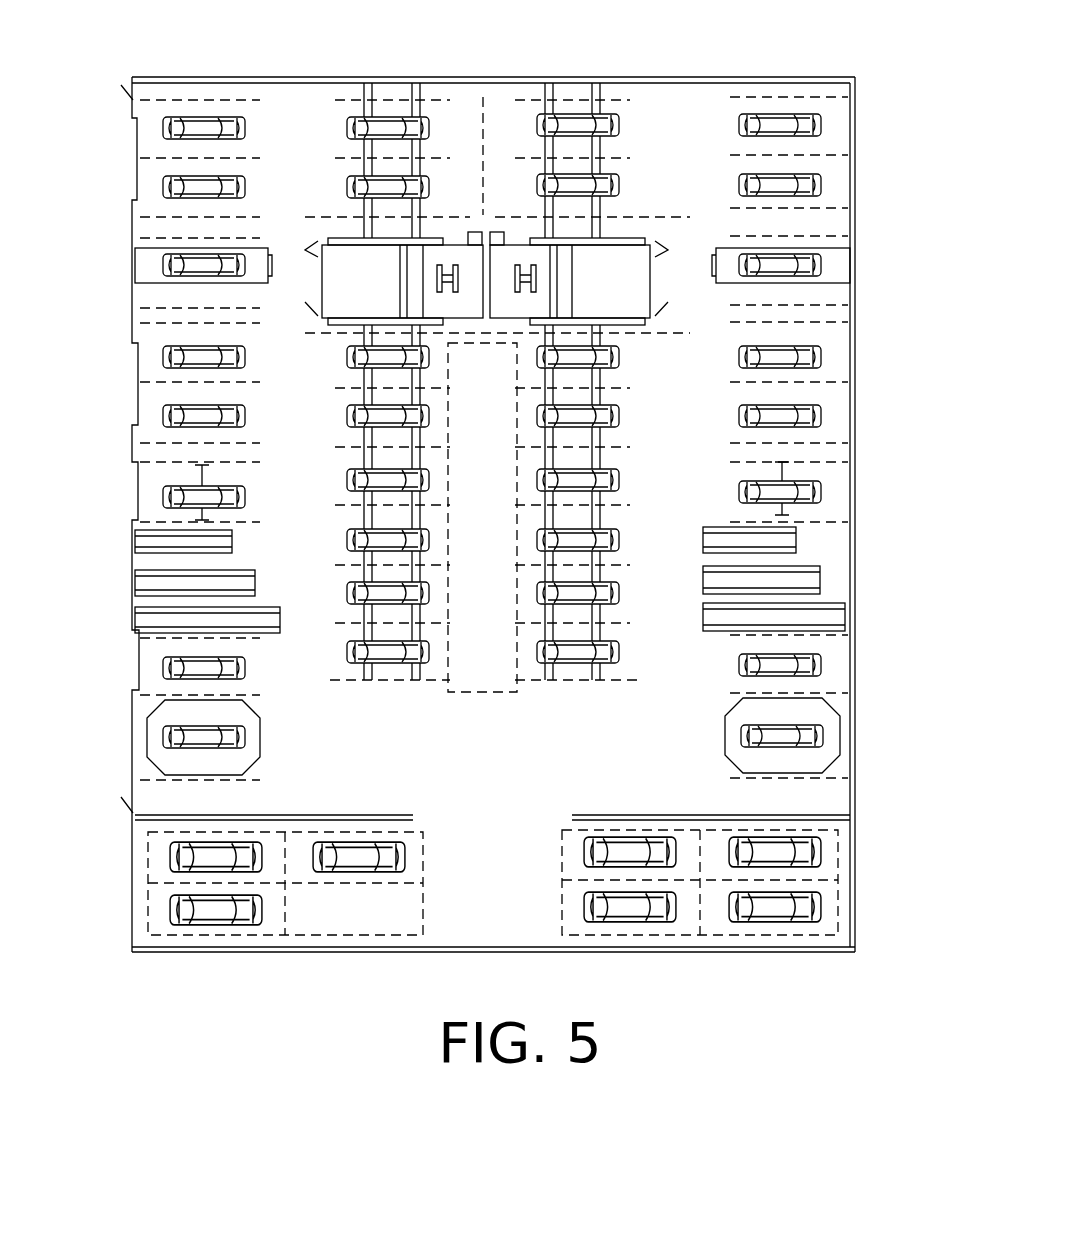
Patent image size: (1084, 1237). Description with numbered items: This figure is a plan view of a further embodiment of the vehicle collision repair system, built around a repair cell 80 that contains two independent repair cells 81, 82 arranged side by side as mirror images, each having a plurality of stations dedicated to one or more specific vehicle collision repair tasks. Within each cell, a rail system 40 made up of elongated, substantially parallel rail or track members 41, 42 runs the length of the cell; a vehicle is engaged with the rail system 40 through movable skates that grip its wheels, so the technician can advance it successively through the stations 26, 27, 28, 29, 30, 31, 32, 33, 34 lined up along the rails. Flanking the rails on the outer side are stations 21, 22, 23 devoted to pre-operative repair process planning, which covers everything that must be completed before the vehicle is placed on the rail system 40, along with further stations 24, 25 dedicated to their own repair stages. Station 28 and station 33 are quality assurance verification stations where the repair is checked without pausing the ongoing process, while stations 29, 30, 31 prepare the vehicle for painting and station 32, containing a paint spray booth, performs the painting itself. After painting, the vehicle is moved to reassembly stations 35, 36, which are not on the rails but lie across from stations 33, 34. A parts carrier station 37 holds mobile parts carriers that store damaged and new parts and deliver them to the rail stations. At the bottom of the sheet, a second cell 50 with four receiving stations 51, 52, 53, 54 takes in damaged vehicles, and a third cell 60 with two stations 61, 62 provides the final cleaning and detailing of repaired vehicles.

The repair cell 80 is at (437, 88).
The independent repair cell 81 is at (160, 92).
The independent repair cell 82 is at (770, 90).
The station 21 is at (152, 350).
The station 22 is at (152, 418).
The station 23 is at (152, 495).
The station 24 is at (152, 672).
The station 25 is at (148, 742).
The station 26 is at (345, 655).
The station 27 is at (345, 591).
The quality assurance verification station 28 is at (345, 540).
The station 29 is at (345, 480).
The station 30 is at (345, 420).
The station 31 is at (345, 360).
The painting station 32 is at (482, 221).
The quality assurance verification station 33 is at (345, 192).
The station 34 is at (345, 143).
The reassembly station 35 is at (152, 143).
The reassembly station 36 is at (152, 192).
The parts carrier station 37 is at (152, 566).
The rail system 40 is at (440, 608).
The rail or track member 41 is at (362, 681).
The rail or track member 42 is at (412, 681).
The second cell 50 is at (840, 942).
The station 51 is at (572, 860).
The station 52 is at (572, 916).
The station 53 is at (832, 858).
The station 54 is at (832, 910).
The third cell 60 is at (152, 940).
The station 61 is at (152, 860).
The station 62 is at (152, 913).